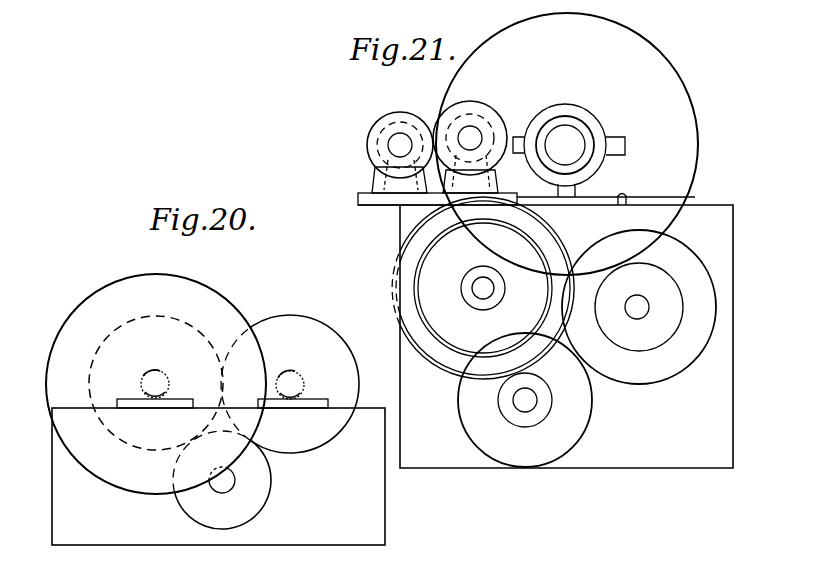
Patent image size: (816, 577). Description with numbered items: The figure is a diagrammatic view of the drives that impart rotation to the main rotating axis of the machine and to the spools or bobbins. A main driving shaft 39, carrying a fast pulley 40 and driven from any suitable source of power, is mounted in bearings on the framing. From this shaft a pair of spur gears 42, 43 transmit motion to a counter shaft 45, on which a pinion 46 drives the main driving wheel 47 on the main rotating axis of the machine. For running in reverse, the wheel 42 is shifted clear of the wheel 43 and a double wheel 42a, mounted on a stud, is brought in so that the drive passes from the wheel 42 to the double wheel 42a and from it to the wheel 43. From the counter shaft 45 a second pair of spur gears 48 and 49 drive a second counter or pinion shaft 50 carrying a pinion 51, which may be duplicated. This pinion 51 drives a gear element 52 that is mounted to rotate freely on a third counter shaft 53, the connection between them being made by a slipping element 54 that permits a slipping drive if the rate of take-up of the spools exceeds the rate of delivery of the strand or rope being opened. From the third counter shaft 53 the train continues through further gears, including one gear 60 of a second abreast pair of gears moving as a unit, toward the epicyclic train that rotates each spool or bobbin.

In FIG. 20, the main driving shaft 39 is at (158, 355).
In FIG. 21, the main driving shaft 39 is at (398, 112).
In FIG. 20, the fast pulley 40 is at (45, 378).
In FIG. 20, the spur gear 42 is at (135, 444).
In FIG. 20, the double wheel 42a is at (272, 491).
In FIG. 20, the spur gear 43 is at (359, 370).
In FIG. 20, the counter shaft 45 is at (293, 377).
In FIG. 21, the counter shaft 45 is at (646, 298).
In FIG. 21, the pinion 46 is at (682, 295).
In FIG. 21, the main driving wheel 47 is at (698, 166).
In FIG. 21, the spur gear 48 is at (710, 344).
In FIG. 21, the spur gear 49 is at (595, 412).
In FIG. 21, the second counter or pinion shaft 50 is at (513, 402).
In FIG. 21, the pinion 51 is at (527, 428).
In FIG. 21, the gear element 52 is at (420, 351).
In FIG. 21, the third counter shaft 53 is at (472, 293).
In FIG. 21, the slipping element 54 is at (447, 338).
In FIG. 21, the gear 60 is at (476, 103).